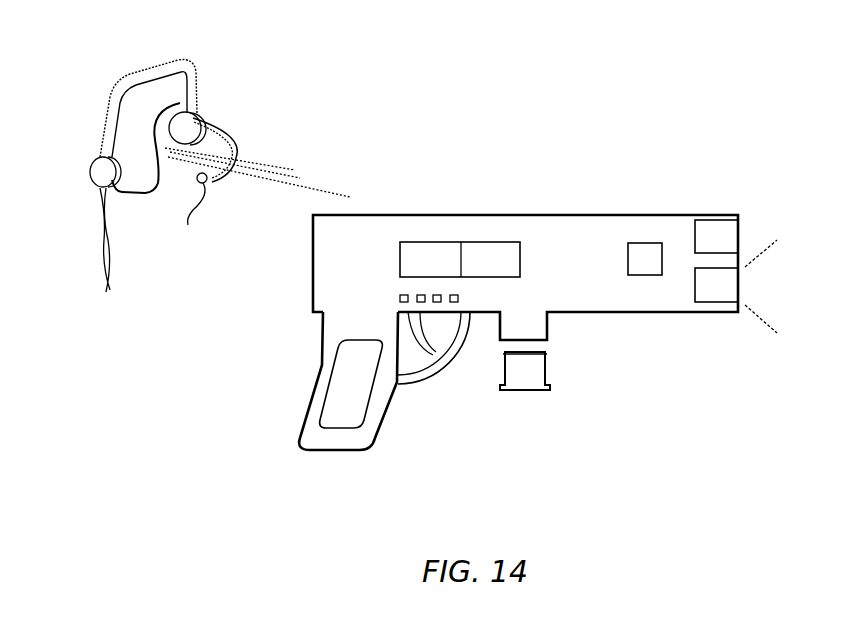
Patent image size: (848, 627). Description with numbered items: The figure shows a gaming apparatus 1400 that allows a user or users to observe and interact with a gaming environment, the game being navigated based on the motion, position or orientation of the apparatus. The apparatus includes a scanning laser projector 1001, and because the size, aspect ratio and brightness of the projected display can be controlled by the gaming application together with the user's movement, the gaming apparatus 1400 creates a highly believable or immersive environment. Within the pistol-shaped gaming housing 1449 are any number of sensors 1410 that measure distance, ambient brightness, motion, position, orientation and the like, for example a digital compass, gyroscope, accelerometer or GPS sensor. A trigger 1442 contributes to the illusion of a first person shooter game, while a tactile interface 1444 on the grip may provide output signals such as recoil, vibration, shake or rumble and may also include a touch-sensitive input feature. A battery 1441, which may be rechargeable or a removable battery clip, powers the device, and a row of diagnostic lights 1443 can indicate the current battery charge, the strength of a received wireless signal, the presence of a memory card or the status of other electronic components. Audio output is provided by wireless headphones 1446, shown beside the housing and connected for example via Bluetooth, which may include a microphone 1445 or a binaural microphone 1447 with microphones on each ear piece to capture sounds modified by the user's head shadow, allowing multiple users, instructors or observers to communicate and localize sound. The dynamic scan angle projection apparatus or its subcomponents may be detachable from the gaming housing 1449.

The gaming apparatus 1400 is at (525, 118).
The scanning laser projector 1001 is at (711, 292).
The sensors 1410 is at (432, 252).
The battery 1441 is at (530, 393).
The trigger 1442 is at (447, 363).
The diagnostic lights 1443 is at (398, 298).
The tactile interface 1444 is at (335, 362).
The microphone 1445 is at (207, 183).
The wireless headphones 1446 is at (160, 70).
The binaural microphone 1447 is at (185, 124).
The gaming housing 1449 is at (547, 213).